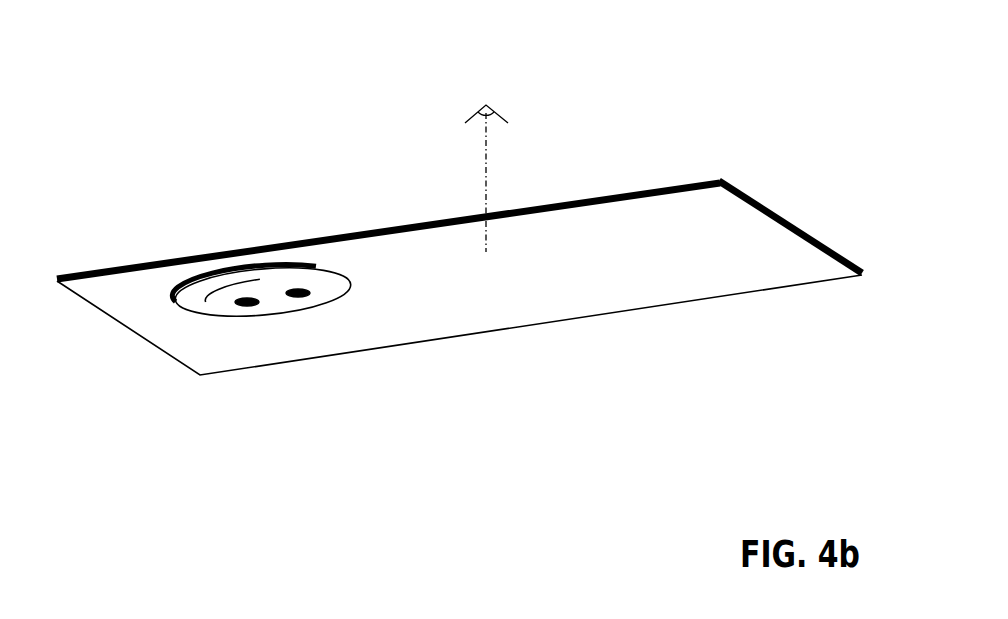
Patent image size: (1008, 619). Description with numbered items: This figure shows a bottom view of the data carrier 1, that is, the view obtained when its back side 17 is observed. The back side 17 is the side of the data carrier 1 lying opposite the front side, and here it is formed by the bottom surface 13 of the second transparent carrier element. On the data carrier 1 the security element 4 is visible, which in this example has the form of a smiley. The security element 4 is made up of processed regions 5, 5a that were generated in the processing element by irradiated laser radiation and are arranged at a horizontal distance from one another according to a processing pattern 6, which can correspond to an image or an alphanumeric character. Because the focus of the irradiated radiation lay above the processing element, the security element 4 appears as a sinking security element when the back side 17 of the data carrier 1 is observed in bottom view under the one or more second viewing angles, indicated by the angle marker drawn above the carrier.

The data carrier 1 is at (456, 212).
The security element 4 is at (213, 307).
The processed region 5 is at (311, 357).
The processed region 5a is at (247, 302).
The processing pattern 6 is at (282, 303).
The bottom surface 13 is at (778, 247).
The back side 17 is at (682, 223).